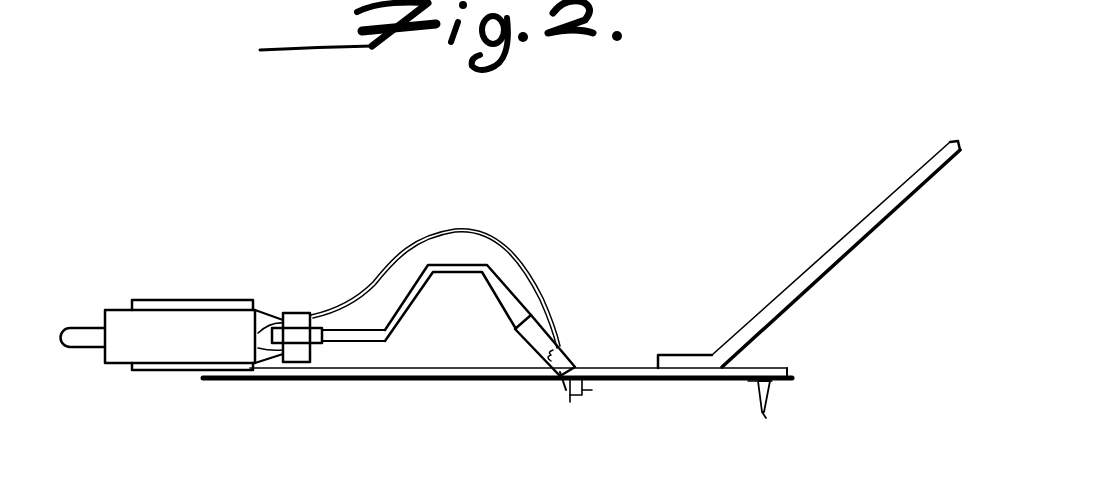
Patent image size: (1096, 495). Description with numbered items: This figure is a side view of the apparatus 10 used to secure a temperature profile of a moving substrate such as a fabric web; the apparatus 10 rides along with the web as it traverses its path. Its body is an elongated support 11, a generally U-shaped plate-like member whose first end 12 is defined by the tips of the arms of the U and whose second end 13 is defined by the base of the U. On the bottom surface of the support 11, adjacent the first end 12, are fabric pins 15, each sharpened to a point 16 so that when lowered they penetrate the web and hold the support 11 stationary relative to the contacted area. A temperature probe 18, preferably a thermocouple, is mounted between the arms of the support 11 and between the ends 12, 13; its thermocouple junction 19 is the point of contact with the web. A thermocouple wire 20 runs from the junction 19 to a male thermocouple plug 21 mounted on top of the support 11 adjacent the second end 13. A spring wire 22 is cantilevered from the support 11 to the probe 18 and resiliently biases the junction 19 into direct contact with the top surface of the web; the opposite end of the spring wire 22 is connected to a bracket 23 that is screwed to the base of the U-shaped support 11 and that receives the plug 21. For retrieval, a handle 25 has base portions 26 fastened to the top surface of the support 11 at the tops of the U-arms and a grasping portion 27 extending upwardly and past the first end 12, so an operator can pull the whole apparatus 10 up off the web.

The apparatus 10 is at (677, 278).
The elongated support 11 is at (390, 380).
The first end 12 is at (787, 366).
The second end 13 is at (203, 377).
The fabric pins 15 is at (757, 381).
The point 16 is at (781, 415).
The temperature probe 18 is at (538, 387).
The thermocouple junction 19 is at (585, 390).
The thermocouple wire 20 is at (525, 233).
The male thermocouple plug 21 is at (123, 328).
The spring wire 22 is at (458, 273).
The bracket 23 is at (266, 305).
The retrieval handle 25 is at (878, 238).
The base portions 26 is at (703, 332).
The grasping portion 27 is at (955, 140).